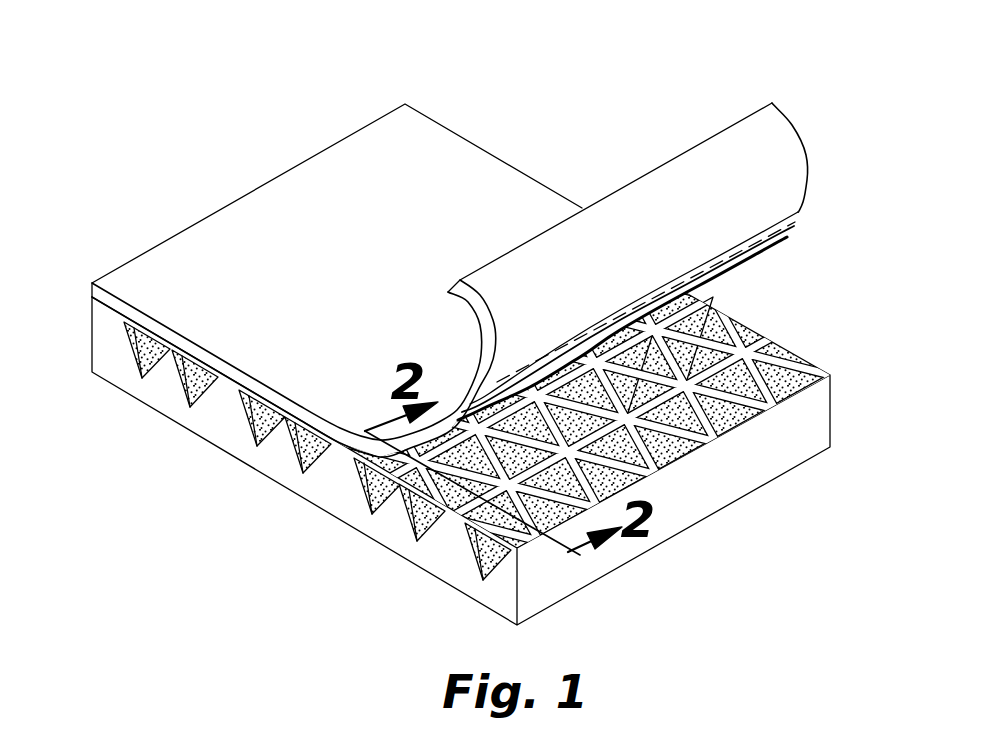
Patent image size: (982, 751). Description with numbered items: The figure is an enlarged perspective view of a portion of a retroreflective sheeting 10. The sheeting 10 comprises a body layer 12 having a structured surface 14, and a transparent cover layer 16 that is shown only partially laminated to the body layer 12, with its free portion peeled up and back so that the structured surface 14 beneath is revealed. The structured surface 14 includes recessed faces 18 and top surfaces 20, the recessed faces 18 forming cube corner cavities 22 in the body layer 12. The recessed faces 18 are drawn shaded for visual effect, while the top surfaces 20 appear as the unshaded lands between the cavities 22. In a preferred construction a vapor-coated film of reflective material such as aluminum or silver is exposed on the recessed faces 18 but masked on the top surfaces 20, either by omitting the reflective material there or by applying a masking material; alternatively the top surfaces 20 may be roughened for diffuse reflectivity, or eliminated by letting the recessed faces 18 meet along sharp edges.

The retroreflective sheeting 10 is at (477, 312).
The body layer 12 is at (118, 373).
The structured surface 14 is at (524, 408).
The transparent cover layer 16 is at (95, 296).
The recessed faces 18 is at (771, 395).
The top surfaces 20 is at (702, 397).
The cube corner cavities 22 is at (688, 353).